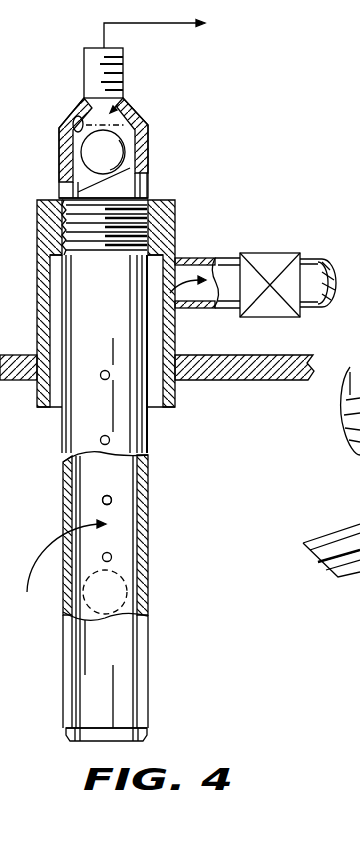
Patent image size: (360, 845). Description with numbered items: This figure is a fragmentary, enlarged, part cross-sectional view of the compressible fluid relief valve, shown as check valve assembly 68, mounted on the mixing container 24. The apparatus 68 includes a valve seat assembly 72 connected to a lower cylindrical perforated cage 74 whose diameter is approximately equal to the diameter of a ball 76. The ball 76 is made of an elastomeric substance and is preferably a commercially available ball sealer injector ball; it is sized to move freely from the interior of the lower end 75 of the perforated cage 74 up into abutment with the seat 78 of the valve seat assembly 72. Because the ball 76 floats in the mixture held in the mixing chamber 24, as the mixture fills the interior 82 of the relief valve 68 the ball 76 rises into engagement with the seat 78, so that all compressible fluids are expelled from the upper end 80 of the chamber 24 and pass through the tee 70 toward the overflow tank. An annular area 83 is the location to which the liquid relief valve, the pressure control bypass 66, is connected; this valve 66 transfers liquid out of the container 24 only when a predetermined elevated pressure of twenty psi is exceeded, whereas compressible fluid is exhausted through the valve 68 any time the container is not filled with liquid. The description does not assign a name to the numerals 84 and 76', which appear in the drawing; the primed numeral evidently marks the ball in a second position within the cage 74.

The tee 70 is at (183, 29).
The upper end 80 is at (124, 65).
The interior 82 is at (118, 104).
The seat 78 is at (72, 125).
The valve seat assembly 72 is at (149, 134).
The ball 76 is at (135, 152).
The check valve assembly 68 is at (24, 262).
The pressure control bypass 66 is at (267, 253).
The mixing container 24 is at (236, 440).
The annular area 83 is at (157, 394).
The hole 84 is at (112, 499).
The lower cylindrical perforated cage 74 is at (149, 531).
The ball lower position 76' is at (145, 592).
The lower end 75 is at (85, 739).